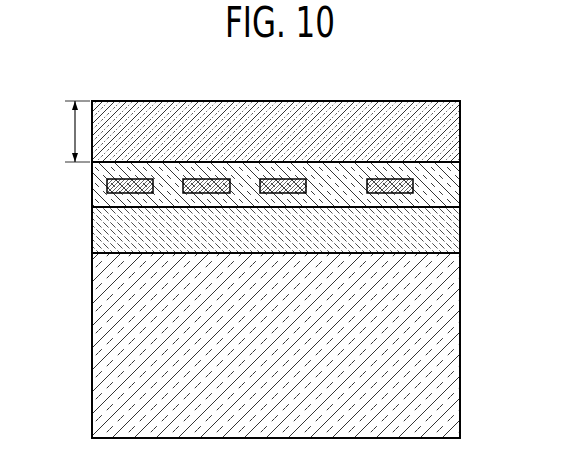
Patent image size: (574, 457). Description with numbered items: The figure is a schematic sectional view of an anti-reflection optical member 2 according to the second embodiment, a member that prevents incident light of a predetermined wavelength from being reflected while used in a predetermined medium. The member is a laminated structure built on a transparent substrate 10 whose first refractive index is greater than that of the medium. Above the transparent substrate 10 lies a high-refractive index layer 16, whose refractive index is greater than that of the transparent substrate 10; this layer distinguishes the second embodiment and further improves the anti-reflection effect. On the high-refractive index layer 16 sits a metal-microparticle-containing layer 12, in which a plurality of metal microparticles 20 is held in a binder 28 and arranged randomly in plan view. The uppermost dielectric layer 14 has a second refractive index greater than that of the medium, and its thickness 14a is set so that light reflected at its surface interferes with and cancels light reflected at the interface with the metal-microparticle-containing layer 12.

The anti-reflection optical member 2 is at (485, 106).
The transparent substrate 10 is at (460, 351).
The metal-microparticle-containing layer 12 is at (470, 195).
The dielectric layer 14 is at (460, 135).
The thickness of the dielectric layer 14a is at (60, 131).
The high-refractive index layer 16 is at (460, 221).
The metal microparticles 20 is at (205, 193).
The binder 28 is at (460, 163).